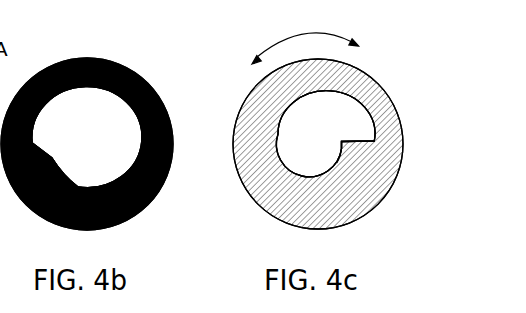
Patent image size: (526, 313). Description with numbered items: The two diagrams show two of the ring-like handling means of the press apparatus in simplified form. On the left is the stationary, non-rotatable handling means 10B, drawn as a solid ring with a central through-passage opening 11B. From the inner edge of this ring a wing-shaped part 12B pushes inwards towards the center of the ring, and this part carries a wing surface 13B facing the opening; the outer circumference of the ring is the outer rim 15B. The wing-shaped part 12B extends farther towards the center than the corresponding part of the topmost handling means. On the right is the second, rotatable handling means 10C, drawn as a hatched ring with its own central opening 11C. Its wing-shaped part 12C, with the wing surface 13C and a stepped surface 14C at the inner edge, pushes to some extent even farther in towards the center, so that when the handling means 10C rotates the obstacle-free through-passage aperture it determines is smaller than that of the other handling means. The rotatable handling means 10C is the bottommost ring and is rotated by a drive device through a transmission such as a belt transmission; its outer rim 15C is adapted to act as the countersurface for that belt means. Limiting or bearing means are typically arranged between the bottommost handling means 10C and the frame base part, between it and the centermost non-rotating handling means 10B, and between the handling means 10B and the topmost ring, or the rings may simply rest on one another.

In FIG. 4b, the stationary handling means 10B is at (130, 70).
In FIG. 4b, the central bore / opening 11B is at (113, 160).
In FIG. 4b, the wing-shaped part 12B is at (48, 152).
In FIG. 4b, the wing surface 13B is at (40, 113).
In FIG. 4b, the outer circumferential surface 15B is at (117, 225).
In FIG. 4c, the second rotatable handling means 10C is at (367, 87).
In FIG. 4c, the central bore / opening 11C is at (337, 148).
In FIG. 4c, the wing-shaped part 12C is at (358, 153).
In FIG. 4c, the wing surface 13C is at (283, 118).
In FIG. 4c, the step / shoulder surface 14C is at (375, 142).
In FIG. 4c, the outer rim 15C is at (270, 210).